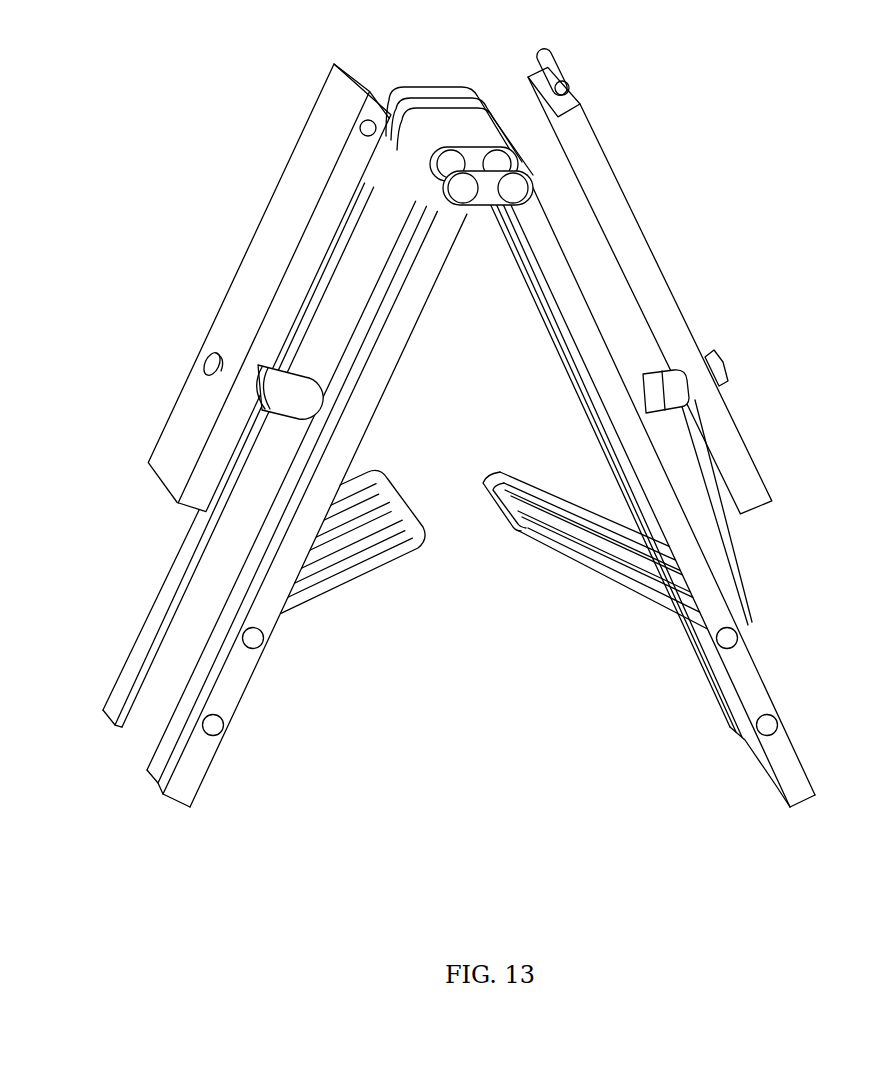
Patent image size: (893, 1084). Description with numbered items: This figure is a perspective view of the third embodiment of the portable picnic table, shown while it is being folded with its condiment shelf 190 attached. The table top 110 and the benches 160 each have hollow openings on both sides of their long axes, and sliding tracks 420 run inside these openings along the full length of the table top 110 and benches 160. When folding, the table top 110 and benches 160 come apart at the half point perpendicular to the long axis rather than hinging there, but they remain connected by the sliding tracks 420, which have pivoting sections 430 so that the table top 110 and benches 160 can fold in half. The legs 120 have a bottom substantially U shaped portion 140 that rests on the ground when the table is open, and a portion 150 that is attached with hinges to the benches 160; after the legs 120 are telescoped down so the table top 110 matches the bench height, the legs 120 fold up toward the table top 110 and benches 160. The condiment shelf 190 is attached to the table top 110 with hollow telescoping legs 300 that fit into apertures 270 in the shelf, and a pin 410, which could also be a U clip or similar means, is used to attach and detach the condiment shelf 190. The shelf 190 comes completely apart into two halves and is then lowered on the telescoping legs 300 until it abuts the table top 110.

The table top 110 is at (147, 743).
The legs 120 is at (345, 548).
The bottom substantially U shaped portion 140 is at (513, 527).
The portion of legs 150 is at (590, 556).
The benches 160 is at (110, 710).
The condiment shelf 190 is at (617, 186).
The apertures for the condiment shelf 270 is at (211, 356).
The telescoping legs 300 is at (657, 393).
The pin 410 is at (555, 78).
The sliding tracks 420 is at (435, 92).
The pivoting sections 430 is at (463, 196).